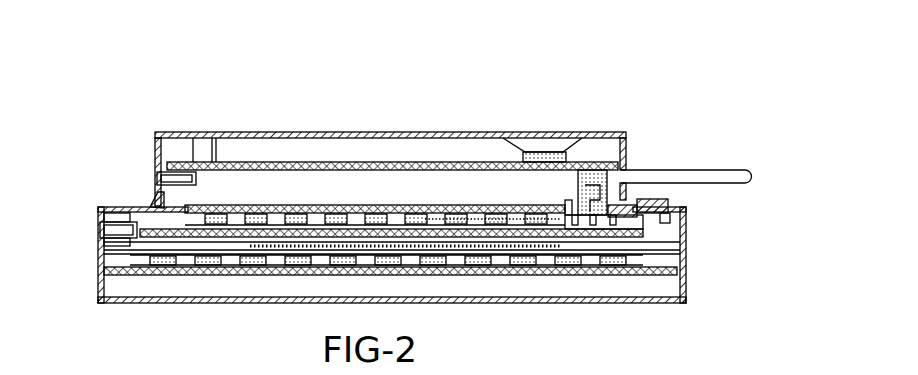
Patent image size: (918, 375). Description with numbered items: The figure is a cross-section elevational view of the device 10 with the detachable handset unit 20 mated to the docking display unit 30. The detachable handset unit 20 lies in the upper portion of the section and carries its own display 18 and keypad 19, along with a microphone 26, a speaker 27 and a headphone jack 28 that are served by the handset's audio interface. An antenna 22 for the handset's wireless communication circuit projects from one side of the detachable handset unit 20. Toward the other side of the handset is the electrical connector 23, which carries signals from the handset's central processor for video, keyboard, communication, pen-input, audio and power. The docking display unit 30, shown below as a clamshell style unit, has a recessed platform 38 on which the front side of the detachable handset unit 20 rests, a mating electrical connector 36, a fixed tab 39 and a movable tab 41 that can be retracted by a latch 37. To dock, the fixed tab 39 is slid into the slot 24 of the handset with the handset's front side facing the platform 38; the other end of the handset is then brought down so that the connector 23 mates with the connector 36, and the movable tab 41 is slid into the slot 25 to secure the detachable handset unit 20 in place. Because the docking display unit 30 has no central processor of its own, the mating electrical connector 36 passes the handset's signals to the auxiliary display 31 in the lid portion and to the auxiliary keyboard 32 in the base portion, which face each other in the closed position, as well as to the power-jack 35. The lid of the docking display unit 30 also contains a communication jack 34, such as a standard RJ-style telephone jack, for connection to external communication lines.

The device 10 is at (497, 63).
The display 18 is at (445, 205).
The keypad 19 is at (285, 200).
The detachable handset unit 20 is at (178, 131).
The antenna 22 is at (730, 185).
The electrical connector 23 is at (593, 180).
The slot 24 is at (158, 177).
The slot 25 is at (617, 205).
The microphone 26 is at (205, 143).
The speaker 27 is at (541, 147).
The headphone jack 28 is at (196, 178).
The docking display unit 30 is at (648, 304).
The auxiliary display 31 is at (255, 243).
The auxiliary keyboard 32 is at (212, 263).
The communication jack 34 is at (124, 272).
The power-jack 35 is at (102, 232).
The mating electrical connector 36 is at (596, 210).
The latch 37 is at (655, 199).
The recessed platform 38 is at (500, 222).
The fixed tab 39 is at (156, 208).
The movable tab 41 is at (634, 199).